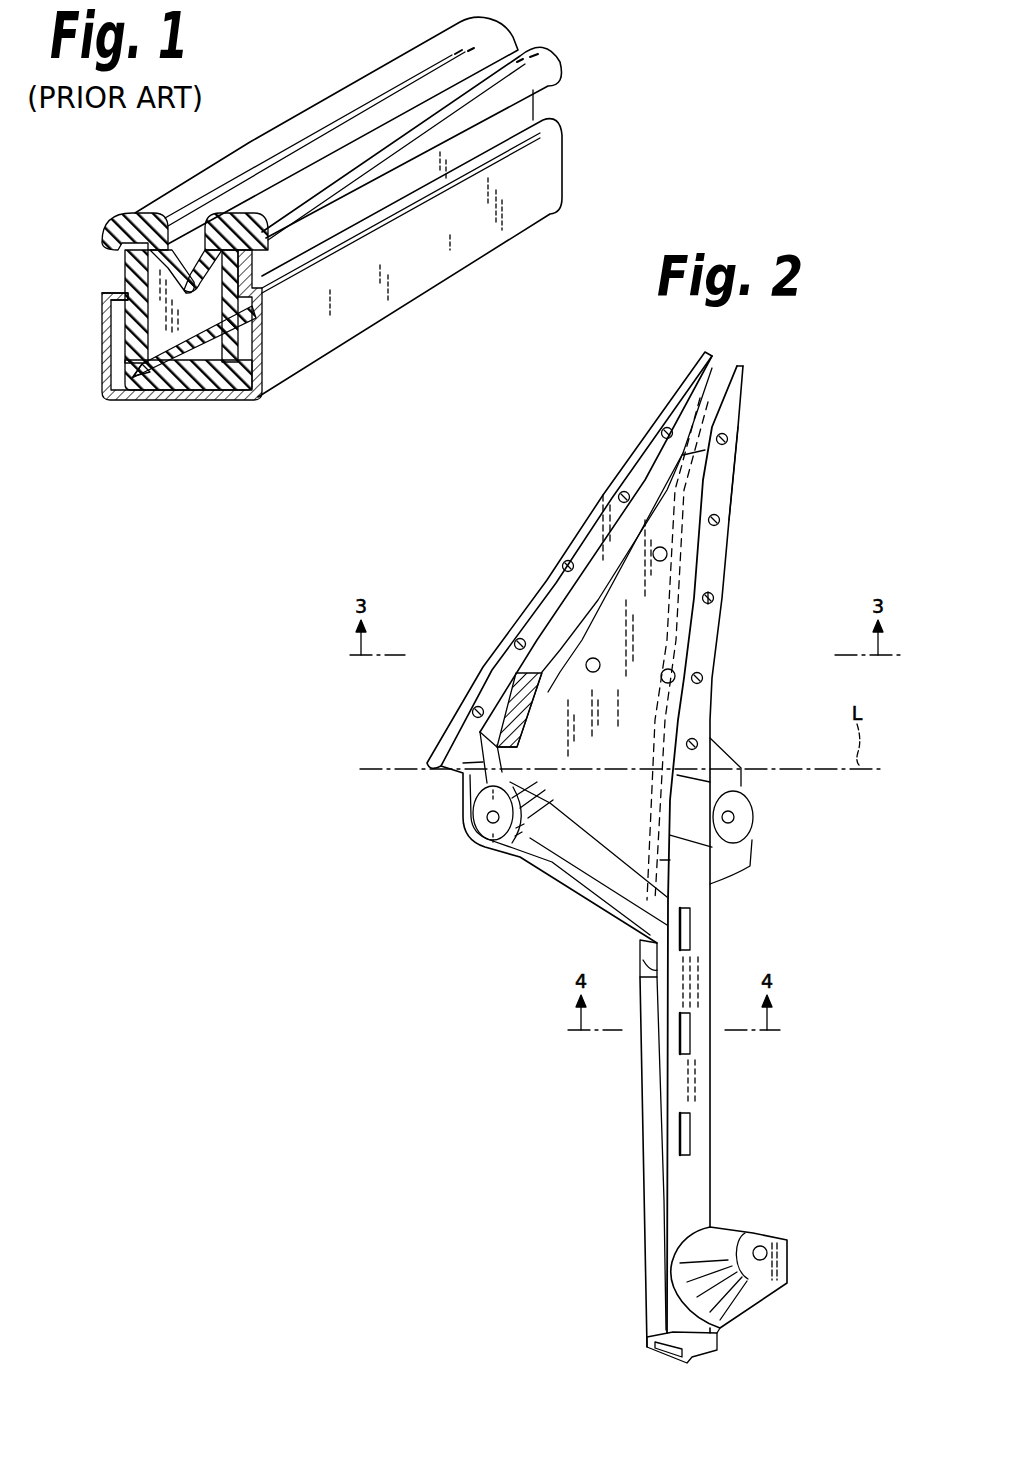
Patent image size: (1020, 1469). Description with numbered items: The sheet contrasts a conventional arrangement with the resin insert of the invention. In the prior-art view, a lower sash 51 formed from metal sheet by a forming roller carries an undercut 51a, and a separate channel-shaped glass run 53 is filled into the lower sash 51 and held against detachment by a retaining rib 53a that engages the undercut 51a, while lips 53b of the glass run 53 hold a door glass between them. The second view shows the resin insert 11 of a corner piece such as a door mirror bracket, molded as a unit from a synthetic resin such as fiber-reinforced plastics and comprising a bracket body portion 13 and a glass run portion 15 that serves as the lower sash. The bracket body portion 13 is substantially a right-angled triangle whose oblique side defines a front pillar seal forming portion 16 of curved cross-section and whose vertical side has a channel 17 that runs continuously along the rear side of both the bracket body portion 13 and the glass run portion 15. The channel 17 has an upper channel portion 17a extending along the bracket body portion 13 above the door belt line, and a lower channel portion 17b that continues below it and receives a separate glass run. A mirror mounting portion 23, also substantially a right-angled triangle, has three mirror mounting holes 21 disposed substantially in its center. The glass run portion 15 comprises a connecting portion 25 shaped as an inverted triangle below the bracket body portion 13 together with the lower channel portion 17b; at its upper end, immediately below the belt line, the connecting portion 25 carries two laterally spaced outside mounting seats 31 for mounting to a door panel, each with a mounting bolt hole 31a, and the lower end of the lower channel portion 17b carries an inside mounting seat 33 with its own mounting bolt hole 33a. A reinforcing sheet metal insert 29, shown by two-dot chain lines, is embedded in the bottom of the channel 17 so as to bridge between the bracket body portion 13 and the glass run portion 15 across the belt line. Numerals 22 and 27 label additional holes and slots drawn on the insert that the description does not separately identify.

In FIG. 2, the resin insert 11 is at (755, 388).
In FIG. 2, the bracket body portion 13 is at (604, 479).
In FIG. 2, the glass run portion 15 is at (638, 1118).
In FIG. 2, the front pillar seal forming portion 16 is at (538, 604).
In FIG. 2, the channel 17 is at (738, 426).
In FIG. 2, the upper channel portion 17a is at (728, 467).
In FIG. 2, the lower channel portion 17b is at (705, 950).
In FIG. 2, the mirror mounting holes 21 is at (669, 554).
In FIG. 2, the fastening holes 22 is at (717, 522).
In FIG. 2, the mirror mounting portion 23 is at (673, 589).
In FIG. 2, the connecting portion 25 is at (608, 835).
In FIG. 2, the slots 27 is at (691, 917).
In FIG. 2, the reinforcing sheet metal insert 29 is at (680, 714).
In FIG. 2, the outside mounting seats 31 is at (466, 811).
In FIG. 2, the mounting bolt hole 31a is at (486, 818).
In FIG. 2, the inside mounting seat 33 is at (790, 1290).
In FIG. 2, the mounting bolt hole 33a is at (760, 1245).
In FIG. 1, the lower sash 51 is at (296, 334).
In FIG. 1, the undercut 51a is at (116, 298).
In FIG. 1, the glass run 53 is at (213, 380).
In FIG. 1, the retaining rib 53a is at (128, 314).
In FIG. 1, the lips 53b is at (205, 245).